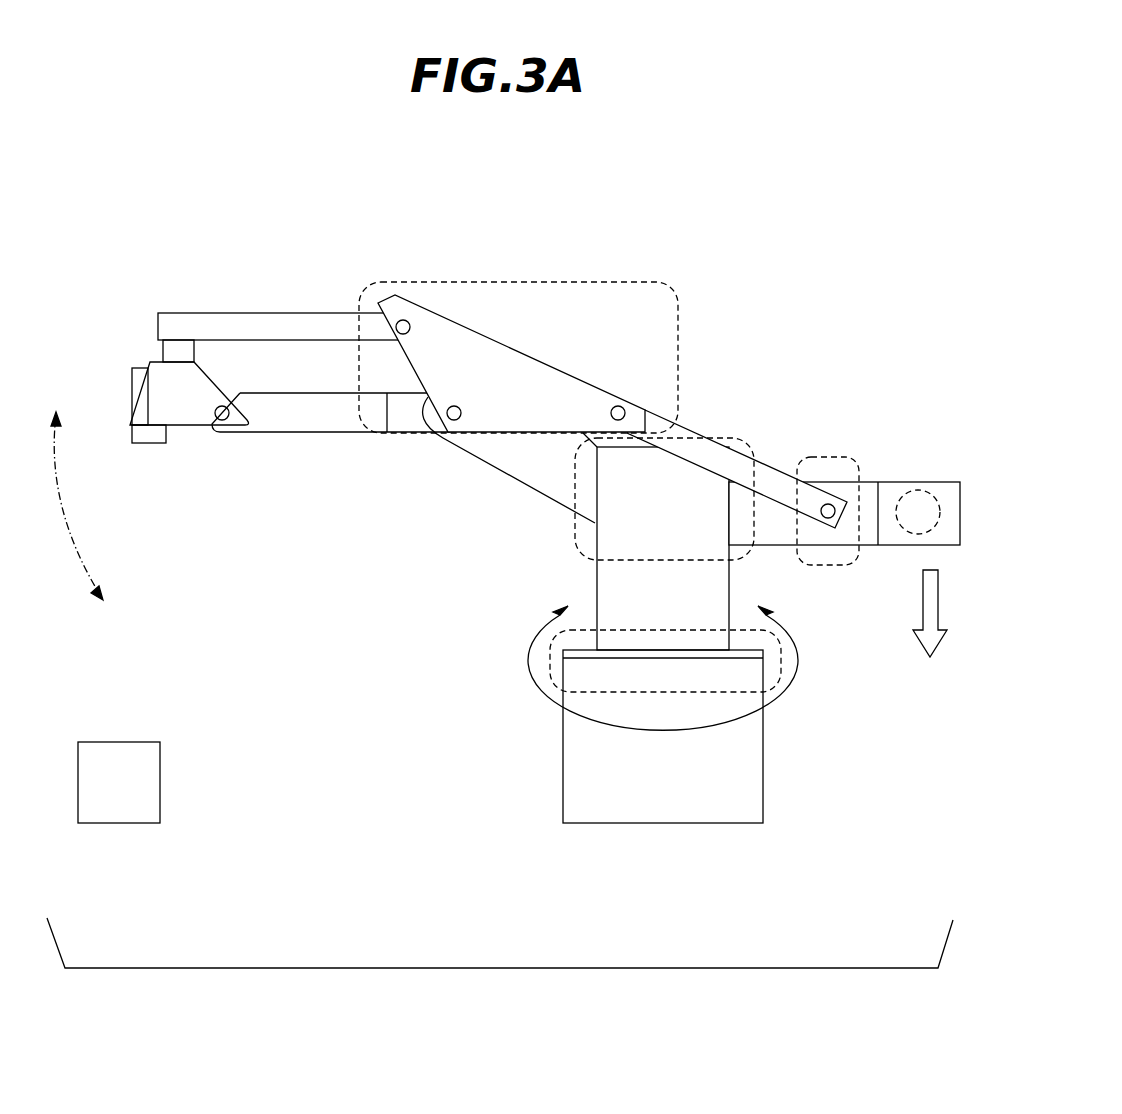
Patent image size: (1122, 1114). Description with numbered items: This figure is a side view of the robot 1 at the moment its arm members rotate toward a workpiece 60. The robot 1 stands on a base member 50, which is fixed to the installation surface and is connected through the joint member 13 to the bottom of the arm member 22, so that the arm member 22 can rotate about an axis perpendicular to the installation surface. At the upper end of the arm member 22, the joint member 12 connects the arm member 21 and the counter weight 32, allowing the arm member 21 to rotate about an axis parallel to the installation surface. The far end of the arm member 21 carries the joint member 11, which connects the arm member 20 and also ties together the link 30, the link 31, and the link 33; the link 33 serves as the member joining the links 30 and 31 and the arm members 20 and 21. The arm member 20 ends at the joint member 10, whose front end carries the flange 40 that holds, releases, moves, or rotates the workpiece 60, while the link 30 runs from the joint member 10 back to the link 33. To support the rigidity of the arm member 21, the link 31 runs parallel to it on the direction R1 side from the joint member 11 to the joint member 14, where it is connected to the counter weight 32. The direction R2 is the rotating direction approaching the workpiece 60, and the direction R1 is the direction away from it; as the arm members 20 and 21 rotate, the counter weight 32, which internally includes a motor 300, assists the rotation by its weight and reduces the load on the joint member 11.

The robot 1 is at (655, 258).
The joint member 10 is at (187, 400).
The joint member 11 is at (525, 281).
The joint member 12 is at (758, 456).
The joint member 13 is at (547, 657).
The joint member 14 is at (860, 457).
The arm member 20 is at (302, 407).
The arm member 21 is at (533, 453).
The arm member 22 is at (630, 593).
The link 30 is at (282, 323).
The link 31 is at (702, 438).
The counter weight 32 is at (768, 520).
The link 33 is at (503, 370).
The flange 40 is at (143, 432).
The base member 50 is at (728, 753).
The workpiece 60 is at (118, 740).
The motor 300 is at (919, 536).
The direction R1 is at (72, 490).
The direction R2 is at (105, 622).